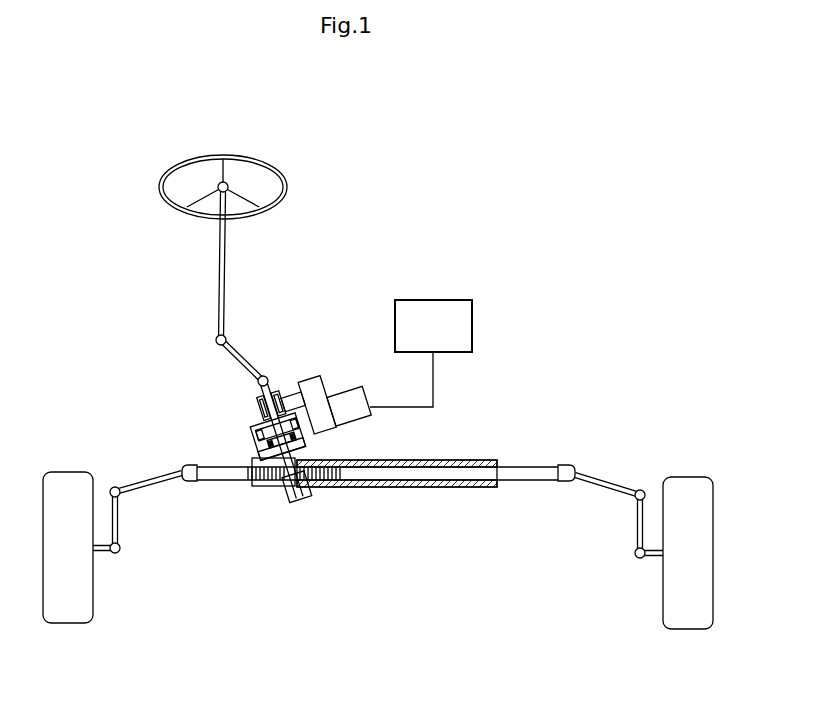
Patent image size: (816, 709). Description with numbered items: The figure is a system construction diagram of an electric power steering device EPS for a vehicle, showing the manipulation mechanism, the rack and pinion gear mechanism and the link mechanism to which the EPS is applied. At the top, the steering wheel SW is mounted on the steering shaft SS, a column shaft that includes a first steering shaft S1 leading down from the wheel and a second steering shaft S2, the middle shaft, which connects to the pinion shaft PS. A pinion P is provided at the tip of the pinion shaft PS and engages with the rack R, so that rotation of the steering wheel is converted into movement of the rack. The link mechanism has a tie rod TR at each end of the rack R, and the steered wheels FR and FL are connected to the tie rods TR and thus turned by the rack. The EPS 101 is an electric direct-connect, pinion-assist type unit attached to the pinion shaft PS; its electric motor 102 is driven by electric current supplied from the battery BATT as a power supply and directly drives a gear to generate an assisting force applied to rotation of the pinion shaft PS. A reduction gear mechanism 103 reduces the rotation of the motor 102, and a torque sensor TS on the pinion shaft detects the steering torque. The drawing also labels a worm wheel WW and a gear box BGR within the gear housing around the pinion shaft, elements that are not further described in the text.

The steering wheel SW is at (287, 189).
The first steering shaft S1 is at (219, 270).
The second steering shaft S2 is at (229, 352).
The steering shaft SS is at (232, 223).
The electric power steering device EPS is at (359, 367).
The EPS 101 is at (348, 356).
The electric motor 102 is at (366, 402).
The reduction gear mechanism 103 is at (258, 410).
The torque sensor TS is at (264, 398).
The worm wheel WW is at (254, 436).
The gear box BGR is at (262, 448).
The pinion shaft PS is at (300, 448).
The pinion P is at (289, 488).
The rack R is at (366, 487).
The battery BATT is at (421, 353).
The tie rod TR is at (182, 484).
The steered wheel FR is at (63, 472).
The steered wheel FL is at (687, 477).